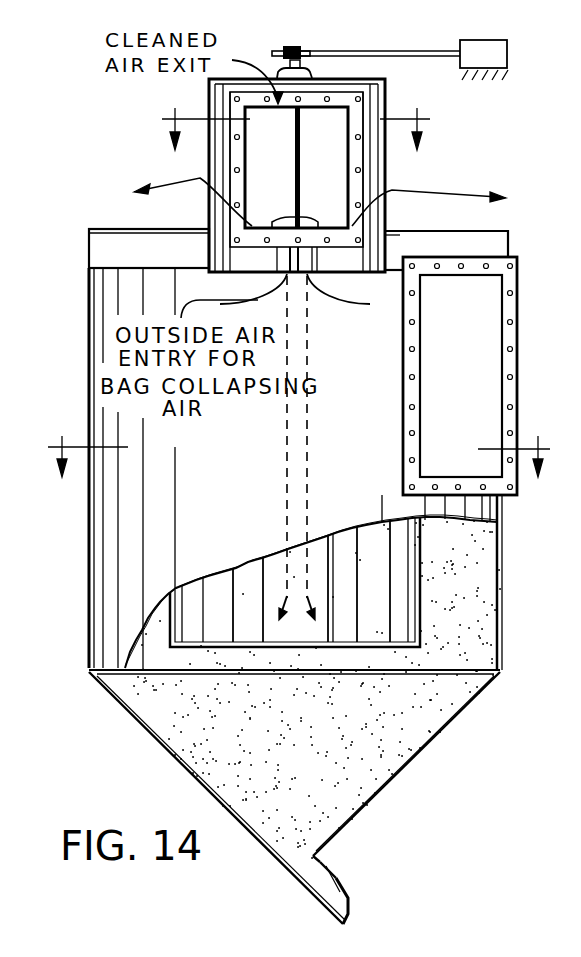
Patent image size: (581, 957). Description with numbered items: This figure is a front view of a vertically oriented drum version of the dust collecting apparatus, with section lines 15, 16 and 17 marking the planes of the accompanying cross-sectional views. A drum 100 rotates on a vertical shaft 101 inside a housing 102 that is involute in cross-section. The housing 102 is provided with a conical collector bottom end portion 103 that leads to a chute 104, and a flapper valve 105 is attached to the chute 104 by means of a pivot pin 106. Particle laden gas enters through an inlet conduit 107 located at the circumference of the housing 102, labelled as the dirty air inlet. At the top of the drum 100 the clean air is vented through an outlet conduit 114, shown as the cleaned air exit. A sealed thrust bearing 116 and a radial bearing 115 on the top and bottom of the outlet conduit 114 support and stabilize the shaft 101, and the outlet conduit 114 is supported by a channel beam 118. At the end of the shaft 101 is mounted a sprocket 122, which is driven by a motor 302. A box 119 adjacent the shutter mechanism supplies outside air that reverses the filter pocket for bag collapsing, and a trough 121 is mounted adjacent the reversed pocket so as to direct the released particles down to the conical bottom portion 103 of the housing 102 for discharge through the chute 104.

The drum 100 is at (434, 594).
The vertical shaft 101 is at (303, 170).
The housing 102 is at (505, 560).
The conical collector bottom end portion 103 is at (400, 768).
The chute 104 is at (320, 855).
The flapper valve 105 is at (346, 900).
The pivot pin 106 is at (334, 872).
The inlet conduit 107 is at (512, 336).
The outlet conduit 114 is at (386, 92).
The radial bearing 115 is at (318, 76).
The sealed thrust bearing 116 is at (282, 218).
The channel beam 118 is at (113, 232).
The box 119 is at (313, 254).
The trough 121 is at (266, 634).
The sprocket 122 is at (317, 50).
The motor 302 is at (486, 50).
The cross-sectional view line 15 is at (302, 473).
The cross-sectional view line 16 is at (297, 144).
The cross-sectional view line 17 is at (573, 697).